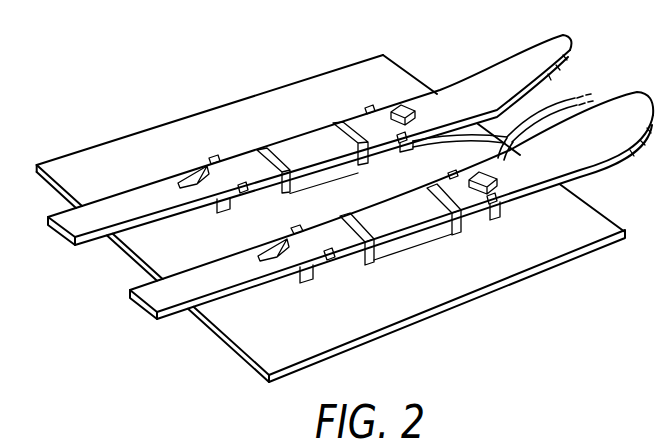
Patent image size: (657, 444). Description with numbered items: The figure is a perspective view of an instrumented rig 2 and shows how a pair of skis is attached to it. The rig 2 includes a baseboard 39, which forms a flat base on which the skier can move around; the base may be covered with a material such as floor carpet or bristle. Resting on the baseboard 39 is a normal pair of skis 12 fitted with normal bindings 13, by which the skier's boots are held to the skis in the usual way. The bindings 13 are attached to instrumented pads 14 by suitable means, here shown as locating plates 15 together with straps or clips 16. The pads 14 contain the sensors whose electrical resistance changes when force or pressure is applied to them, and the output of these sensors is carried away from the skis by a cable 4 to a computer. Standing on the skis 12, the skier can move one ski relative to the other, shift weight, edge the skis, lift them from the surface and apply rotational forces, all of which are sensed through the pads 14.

The rig 2 is at (425, 297).
The baseboard 39 is at (577, 259).
The skis 12 is at (170, 298).
The bindings 13 is at (283, 258).
The instrumented pads 14 is at (346, 262).
The locating plates 15 is at (211, 157).
The straps or clips 16 is at (338, 122).
The cable 4 is at (558, 110).